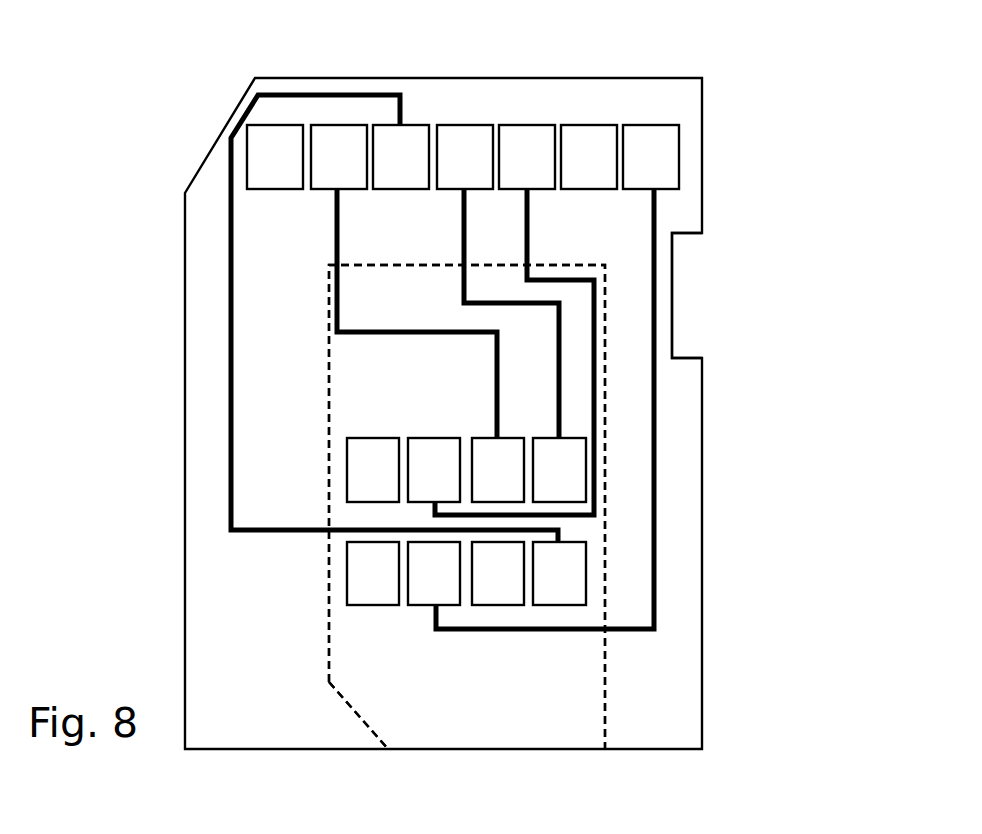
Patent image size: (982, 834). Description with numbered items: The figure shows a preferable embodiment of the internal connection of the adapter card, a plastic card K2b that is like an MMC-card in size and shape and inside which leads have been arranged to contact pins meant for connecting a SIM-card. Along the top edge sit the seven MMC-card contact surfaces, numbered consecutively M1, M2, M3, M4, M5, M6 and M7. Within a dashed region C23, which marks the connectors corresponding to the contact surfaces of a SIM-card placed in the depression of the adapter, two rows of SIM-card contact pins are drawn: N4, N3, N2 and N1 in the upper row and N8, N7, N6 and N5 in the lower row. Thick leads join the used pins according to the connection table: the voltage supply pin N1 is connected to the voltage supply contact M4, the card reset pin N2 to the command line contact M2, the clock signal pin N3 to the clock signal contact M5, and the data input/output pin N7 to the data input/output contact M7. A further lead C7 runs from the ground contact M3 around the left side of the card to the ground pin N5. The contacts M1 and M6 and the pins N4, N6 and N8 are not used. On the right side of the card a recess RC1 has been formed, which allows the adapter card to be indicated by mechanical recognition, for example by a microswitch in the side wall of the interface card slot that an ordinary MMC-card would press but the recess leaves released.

The chip card body K2b is at (643, 108).
The recess RC1 is at (672, 303).
The connectors C23 is at (630, 465).
The conductor track C7 is at (231, 440).
The MMC-card contact pin M1 is at (275, 157).
The MMC-card contact pin (command line) M2 is at (339, 157).
The MMC-card contact pin (ground) M3 is at (401, 157).
The MMC-card contact pin (voltage supply) M4 is at (465, 157).
The MMC-card contact pin (clock signal) M5 is at (527, 157).
The MMC-card contact pin M6 is at (589, 157).
The MMC-card contact pin (data I/O) M7 is at (651, 157).
The SIM-card contact pin (voltage supply) N1 is at (559, 470).
The SIM-card contact pin (card reset) N2 is at (498, 470).
The SIM-card contact pin (clock signal) N3 is at (434, 470).
The SIM-card contact pin N4 is at (373, 470).
The SIM-card contact pin (ground) N5 is at (559, 573).
The SIM-card contact pin N6 is at (498, 573).
The SIM-card contact pin (data I/O) N7 is at (434, 573).
The SIM-card contact pin N8 is at (373, 573).